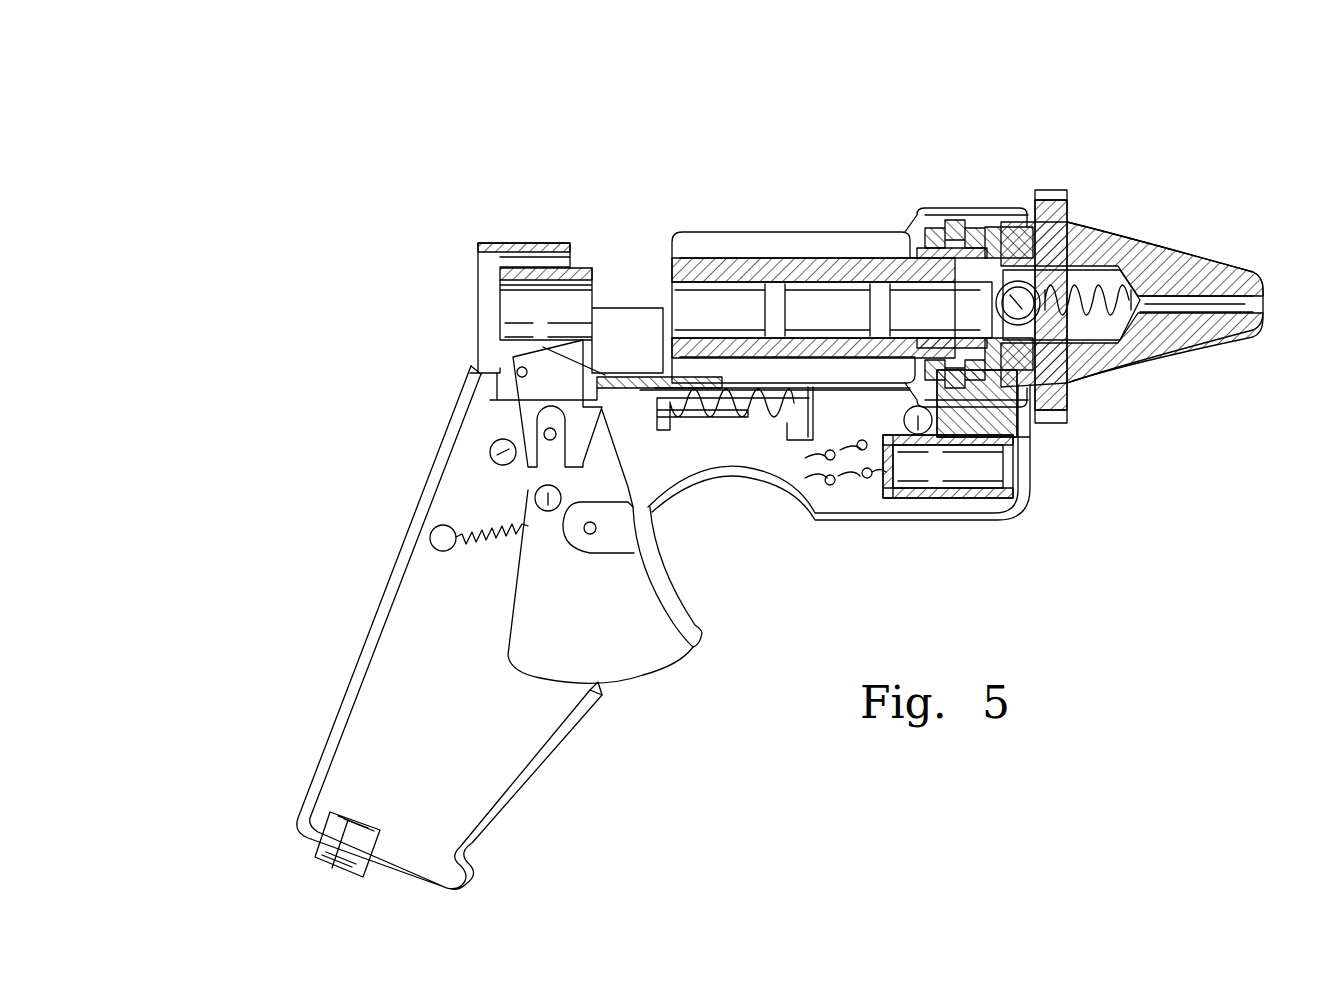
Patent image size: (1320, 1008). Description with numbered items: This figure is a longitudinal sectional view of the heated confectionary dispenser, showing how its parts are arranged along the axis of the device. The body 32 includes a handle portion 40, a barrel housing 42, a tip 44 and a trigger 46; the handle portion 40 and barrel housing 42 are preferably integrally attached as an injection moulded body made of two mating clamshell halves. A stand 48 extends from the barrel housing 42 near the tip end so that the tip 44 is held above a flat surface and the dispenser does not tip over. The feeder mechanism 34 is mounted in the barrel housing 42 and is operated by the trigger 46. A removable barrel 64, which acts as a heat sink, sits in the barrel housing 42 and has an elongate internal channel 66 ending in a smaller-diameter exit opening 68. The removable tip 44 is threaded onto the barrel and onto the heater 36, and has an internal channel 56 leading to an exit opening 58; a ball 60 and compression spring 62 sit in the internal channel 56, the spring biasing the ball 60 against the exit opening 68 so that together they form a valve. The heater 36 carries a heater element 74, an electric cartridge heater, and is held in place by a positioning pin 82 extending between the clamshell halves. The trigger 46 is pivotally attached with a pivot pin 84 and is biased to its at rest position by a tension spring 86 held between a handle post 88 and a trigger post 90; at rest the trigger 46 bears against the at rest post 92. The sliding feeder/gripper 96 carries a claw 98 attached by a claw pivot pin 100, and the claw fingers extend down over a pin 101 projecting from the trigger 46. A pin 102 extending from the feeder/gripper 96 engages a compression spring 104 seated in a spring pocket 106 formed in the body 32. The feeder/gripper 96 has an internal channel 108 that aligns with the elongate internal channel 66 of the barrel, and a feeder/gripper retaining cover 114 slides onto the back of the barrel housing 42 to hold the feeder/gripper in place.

The body 32 is at (320, 752).
The feeder mechanism 34 is at (592, 308).
The heater 36 is at (953, 247).
The handle portion 40 is at (548, 760).
The barrel housing 42 is at (870, 512).
The tip 44 is at (1052, 187).
The trigger 46 is at (690, 597).
The stand 48 is at (1040, 487).
The internal channel 56 is at (1073, 277).
The exit opening 58 is at (1253, 297).
The ball 60 is at (1032, 327).
The compression spring 62 is at (1082, 330).
The removable barrel 64 is at (720, 232).
The elongate internal channel 66 is at (692, 310).
The exit opening 68 is at (975, 305).
The heater element 74 is at (1037, 523).
The positioning pin 82 is at (923, 447).
The pivot pin 84 is at (590, 535).
The tension spring 86 is at (497, 540).
The handle post 88 is at (440, 538).
The trigger post 90 is at (548, 510).
The at rest post 92 is at (500, 452).
The sliding feeder/gripper 96 is at (500, 327).
The claw 98 is at (540, 355).
The claw pivot pin 100 is at (478, 365).
The pin 101 is at (550, 434).
The pin 102 is at (705, 425).
The compression spring 104 is at (763, 425).
The spring pocket 106 is at (812, 500).
The internal channel 108 is at (546, 305).
The feeder/gripper retaining cover 114 is at (513, 243).